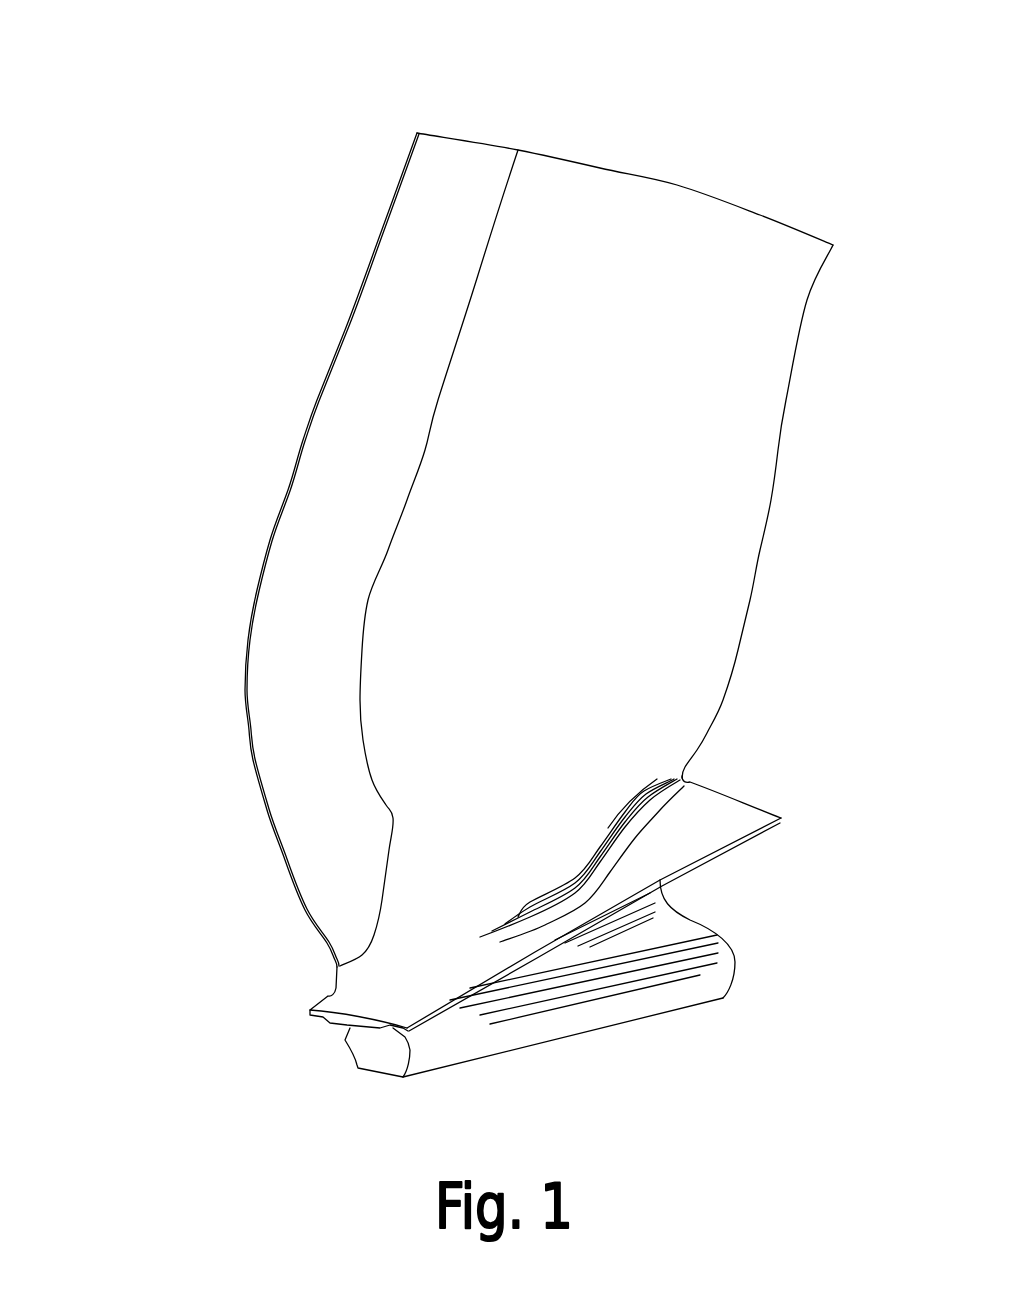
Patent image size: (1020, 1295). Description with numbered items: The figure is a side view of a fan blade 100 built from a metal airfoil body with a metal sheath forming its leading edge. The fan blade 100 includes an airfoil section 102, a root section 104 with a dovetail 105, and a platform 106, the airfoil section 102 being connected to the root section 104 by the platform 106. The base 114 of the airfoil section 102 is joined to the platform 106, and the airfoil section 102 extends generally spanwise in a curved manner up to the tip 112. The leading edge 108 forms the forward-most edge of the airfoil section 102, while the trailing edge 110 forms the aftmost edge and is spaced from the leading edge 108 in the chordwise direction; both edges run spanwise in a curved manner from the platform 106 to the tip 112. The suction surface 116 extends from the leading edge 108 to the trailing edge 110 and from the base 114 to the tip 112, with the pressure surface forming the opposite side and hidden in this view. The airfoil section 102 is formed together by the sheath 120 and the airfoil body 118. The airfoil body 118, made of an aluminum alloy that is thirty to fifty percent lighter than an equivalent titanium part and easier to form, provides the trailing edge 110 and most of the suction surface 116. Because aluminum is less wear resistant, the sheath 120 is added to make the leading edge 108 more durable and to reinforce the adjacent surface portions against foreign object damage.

The fan blade 100 is at (232, 106).
The airfoil section 102 is at (205, 586).
The root section 104 is at (651, 1034).
The dovetail 105 is at (708, 950).
The platform 106 is at (717, 810).
The leading edge 108 is at (302, 432).
The trailing edge 110 is at (790, 386).
The tip 112 is at (675, 185).
The base 114 is at (538, 883).
The suction surface 116 is at (655, 491).
The airfoil body 118 is at (553, 395).
The sheath 120 is at (372, 343).